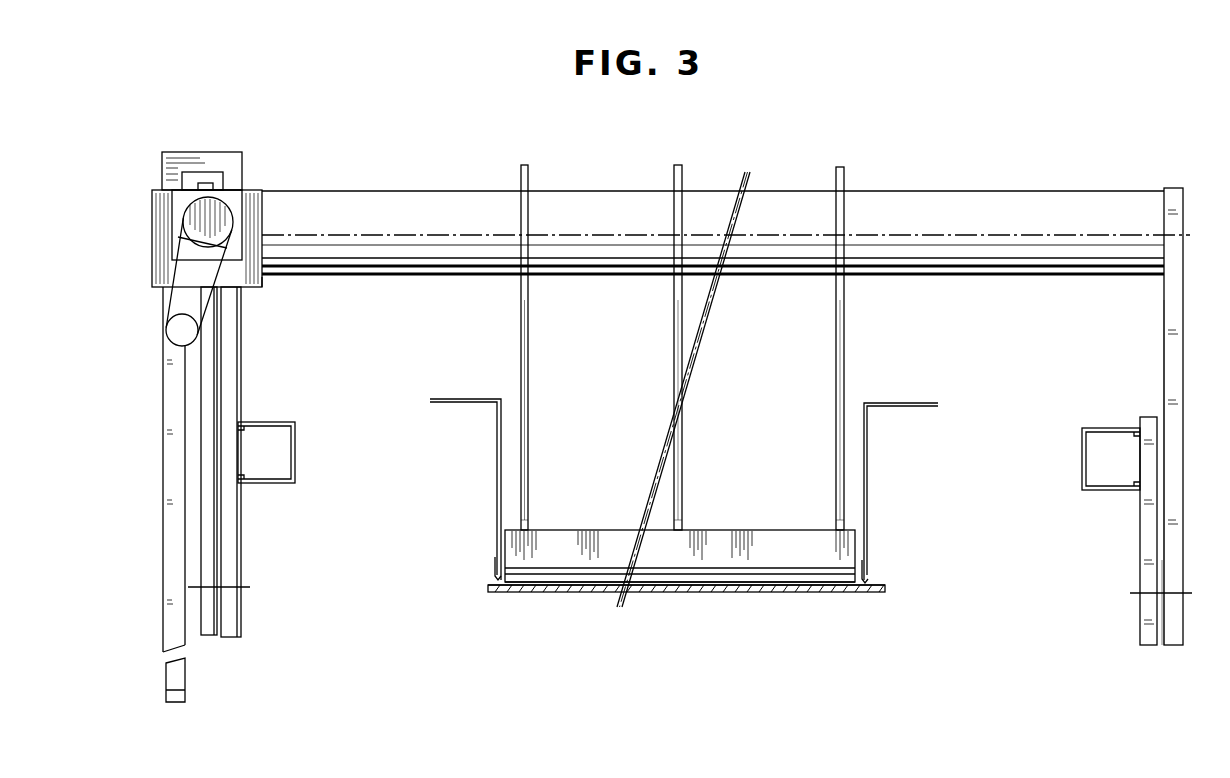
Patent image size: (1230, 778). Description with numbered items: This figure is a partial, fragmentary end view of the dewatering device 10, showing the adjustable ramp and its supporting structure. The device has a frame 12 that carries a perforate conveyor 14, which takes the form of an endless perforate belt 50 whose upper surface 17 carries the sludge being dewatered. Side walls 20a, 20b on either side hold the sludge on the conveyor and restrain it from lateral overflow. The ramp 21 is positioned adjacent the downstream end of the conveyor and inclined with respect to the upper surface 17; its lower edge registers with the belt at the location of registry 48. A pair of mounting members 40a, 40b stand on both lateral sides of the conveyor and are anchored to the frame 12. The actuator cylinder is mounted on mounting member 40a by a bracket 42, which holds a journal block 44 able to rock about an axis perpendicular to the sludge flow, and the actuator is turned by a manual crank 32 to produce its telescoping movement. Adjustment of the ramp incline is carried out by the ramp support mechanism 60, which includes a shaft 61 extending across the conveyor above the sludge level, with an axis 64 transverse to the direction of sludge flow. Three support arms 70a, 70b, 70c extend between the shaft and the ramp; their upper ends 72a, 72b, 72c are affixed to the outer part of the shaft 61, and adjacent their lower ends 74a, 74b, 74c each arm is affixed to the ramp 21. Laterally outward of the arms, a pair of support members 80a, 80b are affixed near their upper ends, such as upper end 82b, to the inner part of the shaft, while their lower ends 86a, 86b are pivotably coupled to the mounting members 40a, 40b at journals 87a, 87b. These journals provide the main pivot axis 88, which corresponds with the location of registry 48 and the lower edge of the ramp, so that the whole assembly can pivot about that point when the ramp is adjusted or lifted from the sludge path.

The dewatering device 10 is at (440, 615).
The frame 12 is at (293, 485).
The perforate conveyor 14 is at (836, 595).
The upper surface 17 is at (770, 584).
The side wall 20a is at (497, 460).
The side wall 20b is at (866, 477).
The ramp 21 is at (613, 535).
The manual crank 32 is at (175, 307).
The mounting member 40a is at (233, 558).
The mounting member 40b is at (1140, 535).
The bracket 42 is at (155, 260).
The journal block 44 is at (173, 212).
The location of registry 48 is at (665, 593).
The endless perforate belt 50 is at (740, 583).
The ramp support mechanism 60 is at (239, 292).
The shaft 61 is at (289, 191).
The axis 64 is at (398, 233).
The support arm 70a is at (520, 358).
The support arm 70b is at (672, 358).
The support arm 70c is at (835, 358).
The upper end 72a is at (524, 165).
The upper end 72b is at (678, 165).
The upper end 72c is at (839, 167).
The lower end 74a is at (528, 528).
The lower end 74b is at (686, 528).
The lower end 74c is at (835, 528).
The support member 80a is at (207, 522).
The support member 80b is at (1183, 550).
The upper end 82b is at (1173, 188).
The lower end 86a is at (210, 636).
The lower end 86b is at (1163, 648).
The journal 87a is at (218, 575).
The journal 87b is at (1157, 582).
The main pivot axis 88 is at (250, 590).